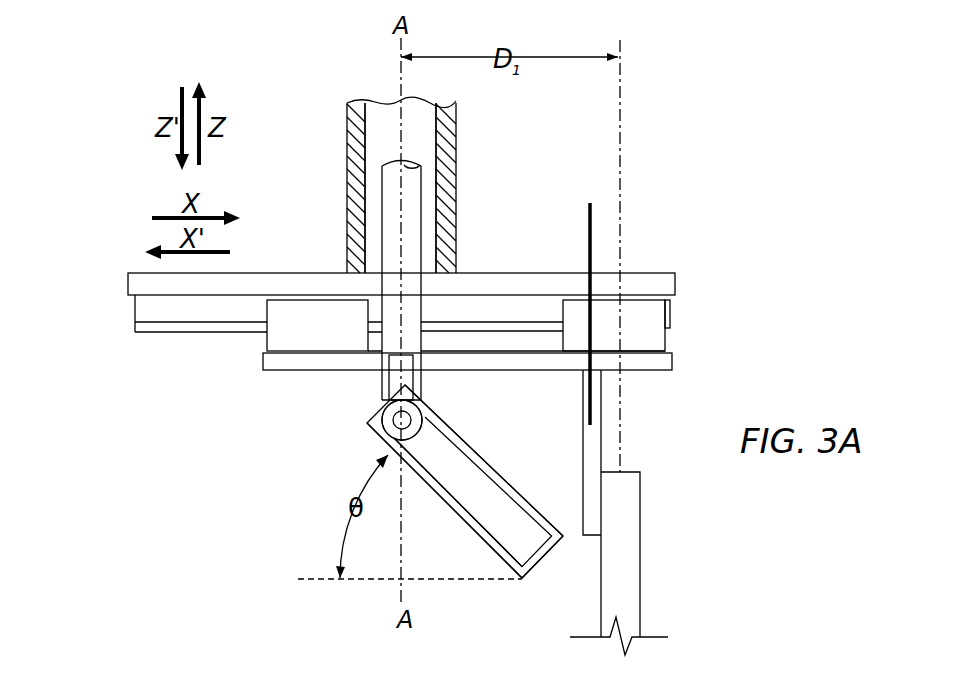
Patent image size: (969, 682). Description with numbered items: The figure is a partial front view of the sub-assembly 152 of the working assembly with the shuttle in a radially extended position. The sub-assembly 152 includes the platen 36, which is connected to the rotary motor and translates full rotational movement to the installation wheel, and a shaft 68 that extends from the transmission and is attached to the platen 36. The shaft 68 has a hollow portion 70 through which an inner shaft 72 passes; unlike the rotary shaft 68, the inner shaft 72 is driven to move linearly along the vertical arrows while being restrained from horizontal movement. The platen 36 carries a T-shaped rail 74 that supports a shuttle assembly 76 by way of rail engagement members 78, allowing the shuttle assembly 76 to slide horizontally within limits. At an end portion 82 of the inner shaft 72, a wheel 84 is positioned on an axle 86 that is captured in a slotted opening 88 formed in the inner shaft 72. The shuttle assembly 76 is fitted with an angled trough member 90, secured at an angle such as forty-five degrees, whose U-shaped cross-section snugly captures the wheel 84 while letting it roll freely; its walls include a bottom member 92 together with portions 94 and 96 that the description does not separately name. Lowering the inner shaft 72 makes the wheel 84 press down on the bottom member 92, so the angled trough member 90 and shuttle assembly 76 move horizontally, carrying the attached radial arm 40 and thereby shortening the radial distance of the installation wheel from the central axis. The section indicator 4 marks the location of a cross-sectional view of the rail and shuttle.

The sub-assembly 152 is at (268, 67).
The shaft 68 is at (455, 106).
The hollow portion 70 is at (383, 127).
The inner shaft 72 is at (390, 198).
The platen 36 is at (108, 281).
The T-shaped rail 74 is at (467, 308).
The shuttle assembly 76 is at (245, 360).
The rail engagement members 78 is at (303, 345).
The slotted opening 88 is at (390, 382).
The end portion 82 is at (368, 399).
The wheel 84 is at (418, 422).
The axle 86 is at (395, 424).
The angled trough member 90 is at (509, 466).
The bottom member 92 is at (457, 510).
The link arm inner wall 94 is at (513, 533).
The link arm end 96 is at (543, 522).
The radial arm 40 is at (633, 570).
The section line 4- 4 is at (516, 225).